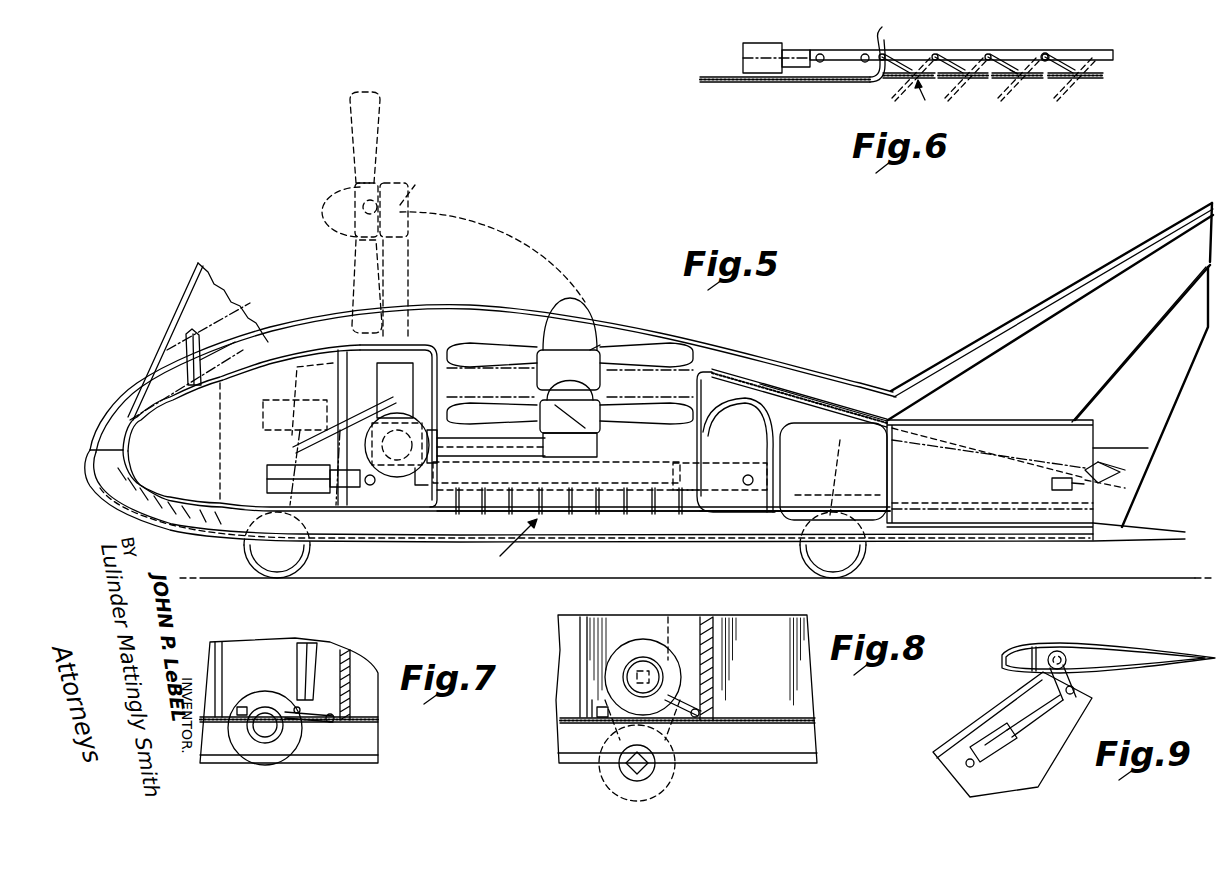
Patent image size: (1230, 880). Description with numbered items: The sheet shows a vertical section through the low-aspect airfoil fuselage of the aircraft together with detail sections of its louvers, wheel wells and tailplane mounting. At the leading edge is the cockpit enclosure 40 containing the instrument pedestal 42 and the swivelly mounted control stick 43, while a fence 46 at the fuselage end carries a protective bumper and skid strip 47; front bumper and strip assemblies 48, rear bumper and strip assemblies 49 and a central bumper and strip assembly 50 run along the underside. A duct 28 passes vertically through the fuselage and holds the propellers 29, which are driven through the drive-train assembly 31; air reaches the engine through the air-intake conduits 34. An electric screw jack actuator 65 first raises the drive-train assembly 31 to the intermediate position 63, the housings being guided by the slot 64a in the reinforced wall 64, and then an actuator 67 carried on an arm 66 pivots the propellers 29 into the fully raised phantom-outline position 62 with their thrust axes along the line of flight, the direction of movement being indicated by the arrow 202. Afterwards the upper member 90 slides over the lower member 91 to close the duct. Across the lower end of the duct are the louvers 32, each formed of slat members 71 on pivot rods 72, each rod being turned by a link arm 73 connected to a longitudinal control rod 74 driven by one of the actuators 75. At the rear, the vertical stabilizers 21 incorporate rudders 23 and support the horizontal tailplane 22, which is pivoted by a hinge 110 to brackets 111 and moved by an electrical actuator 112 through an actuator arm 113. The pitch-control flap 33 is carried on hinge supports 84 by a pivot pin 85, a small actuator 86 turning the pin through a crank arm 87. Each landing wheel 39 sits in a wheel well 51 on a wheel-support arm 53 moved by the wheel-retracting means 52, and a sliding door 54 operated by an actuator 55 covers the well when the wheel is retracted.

In FIG. 5, the vertical stabilizers 21 is at (1018, 318).
In FIG. 9, the horizontal tailplane 22 is at (1113, 643).
In FIG. 5, the rudders 23 is at (1170, 400).
In FIG. 5, the ducts 28 is at (697, 372).
In FIG. 5, the propellers 29 is at (320, 205).
In FIG. 5, the drive-train assembly 31 is at (406, 452).
In FIG. 5, the louvers 32 is at (514, 545).
In FIG. 6, the louvers 32 is at (929, 98).
In FIG. 5, the pitch-control flap 33 is at (1130, 470).
In FIG. 5, the air-intake conduits 34 is at (745, 435).
In FIG. 5, the landing wheels 39 is at (277, 577).
In FIG. 7, the landing wheels 39 is at (280, 692).
In FIG. 8, the landing wheels 39 is at (637, 645).
In FIG. 5, the cockpit enclosure 40 is at (180, 292).
In FIG. 5, the instrument pedestal 42 is at (170, 347).
In FIG. 5, the control stick 43 is at (186, 336).
In FIG. 5, the fences 46 is at (300, 325).
In FIG. 7, the fences 46 is at (372, 742).
In FIG. 5, the protective bumper and skid strip 47 is at (143, 535).
In FIG. 7, the protective bumper and skid strip 47 is at (352, 765).
In FIG. 5, the front bumper and strip assemblies 48 is at (358, 545).
In FIG. 5, the rear bumper and strip assemblies 49 is at (735, 540).
In FIG. 5, the bumper and strip assembly 50 is at (396, 540).
In FIG. 7, the wheel well 51 is at (272, 653).
In FIG. 8, the wheel well 51 is at (595, 643).
In FIG. 5, the wheel-retracting means 52 is at (320, 380).
In FIG. 7, the wheel-retracting means 52 is at (320, 645).
In FIG. 5, the wheel-support arm 53 is at (300, 530).
In FIG. 7, the wheel-support arm 53 is at (300, 760).
In FIG. 8, the door 54 is at (598, 720).
In FIG. 8, the actuator 55 is at (590, 700).
In FIG. 5, the fully raised phantom-outline position 62 is at (415, 185).
In FIG. 5, the intermediate position 63 is at (600, 345).
In FIG. 5, the reinforced wall 64 is at (428, 345).
In FIG. 5, the slot 64a is at (368, 352).
In FIG. 5, the electric screw jack actuator 65 is at (426, 478).
In FIG. 5, the arm 66 is at (315, 448).
In FIG. 5, the actuator 67 is at (267, 487).
In FIG. 5, the slat members 71 is at (480, 480).
In FIG. 6, the slat members 71 is at (950, 57).
In FIG. 6, the pivot rod 72 is at (1013, 74).
In FIG. 6, the link arm 73 is at (1047, 57).
In FIG. 6, the control rod 74 is at (1113, 55).
In FIG. 6, the actuators 75 is at (745, 50).
In FIG. 5, the hinge supports 84 is at (1092, 466).
In FIG. 5, the pivot pin 85 is at (1060, 452).
In FIG. 5, the actuator 86 is at (1053, 484).
In FIG. 5, the crank arm 87 is at (1120, 490).
In FIG. 5, the upper member 90 is at (805, 390).
In FIG. 5, the lower member 91 is at (840, 400).
In FIG. 9, the hinge 110 is at (1058, 650).
In FIG. 9, the brackets 111 is at (1083, 692).
In FIG. 9, the electrical actuator 112 is at (985, 740).
In FIG. 9, the actuator arm 113 is at (1075, 660).
In FIG. 5, the direction arrow 202 is at (108, 395).